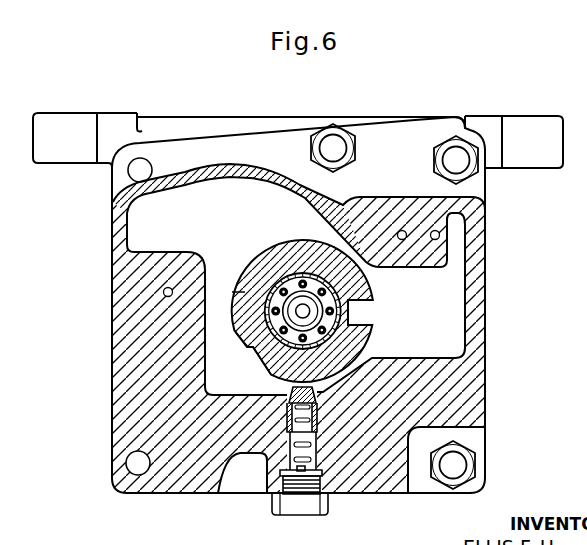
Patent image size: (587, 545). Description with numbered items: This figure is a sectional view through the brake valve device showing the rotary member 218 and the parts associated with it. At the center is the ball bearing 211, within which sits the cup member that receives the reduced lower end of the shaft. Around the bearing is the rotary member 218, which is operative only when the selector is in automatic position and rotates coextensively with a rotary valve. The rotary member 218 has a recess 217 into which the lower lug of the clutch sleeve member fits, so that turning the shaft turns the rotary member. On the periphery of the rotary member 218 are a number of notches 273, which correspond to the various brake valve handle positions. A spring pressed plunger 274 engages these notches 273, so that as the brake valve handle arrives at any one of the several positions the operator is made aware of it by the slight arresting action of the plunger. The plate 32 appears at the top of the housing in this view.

The mounting plate 32 is at (406, 118).
The ball bearing 211 is at (305, 278).
The recess 217 is at (366, 302).
The notches 273 is at (250, 360).
The rotary member 218 is at (263, 352).
The spring pressed plunger 274 is at (318, 398).